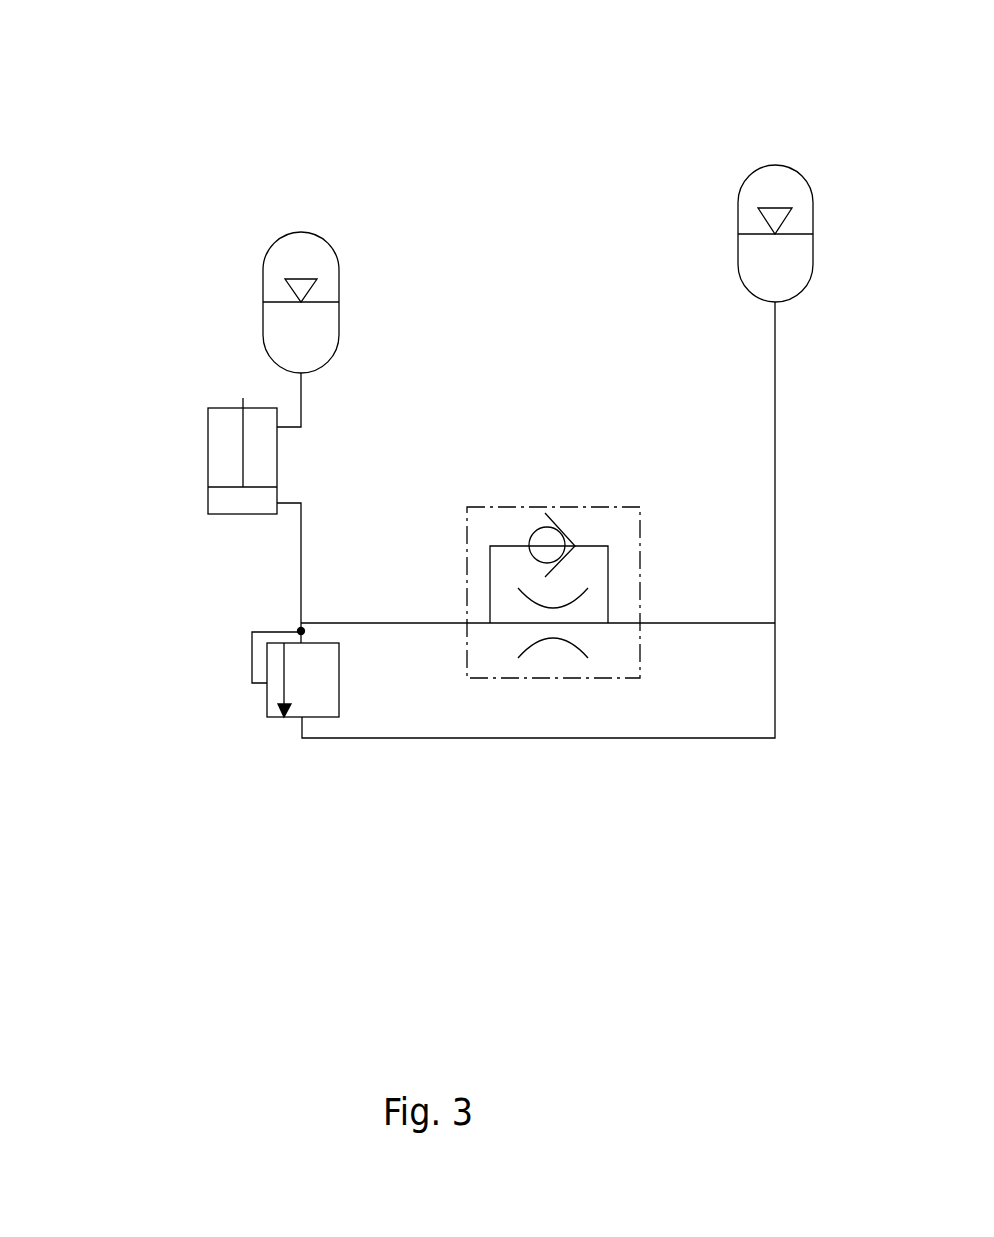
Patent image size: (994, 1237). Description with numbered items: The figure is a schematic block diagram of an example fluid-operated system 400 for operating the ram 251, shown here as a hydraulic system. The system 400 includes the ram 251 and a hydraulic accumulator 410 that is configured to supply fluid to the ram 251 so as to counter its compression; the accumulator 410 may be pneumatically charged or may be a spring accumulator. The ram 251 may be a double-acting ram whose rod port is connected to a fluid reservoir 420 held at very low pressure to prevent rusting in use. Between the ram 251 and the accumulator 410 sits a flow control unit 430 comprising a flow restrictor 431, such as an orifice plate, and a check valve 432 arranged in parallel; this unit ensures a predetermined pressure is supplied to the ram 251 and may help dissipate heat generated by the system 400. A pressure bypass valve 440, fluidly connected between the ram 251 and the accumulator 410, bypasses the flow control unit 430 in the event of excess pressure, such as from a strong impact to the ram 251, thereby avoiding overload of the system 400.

The fluid-operated system 400 is at (198, 141).
The hydraulic accumulator 410 is at (775, 165).
The fluid reservoir 420 is at (263, 283).
The ram 251 is at (208, 462).
The flow control unit 430 is at (610, 507).
The flow restrictor 431 is at (517, 623).
The check valve 432 is at (533, 530).
The pressure bypass valve 440 is at (267, 703).